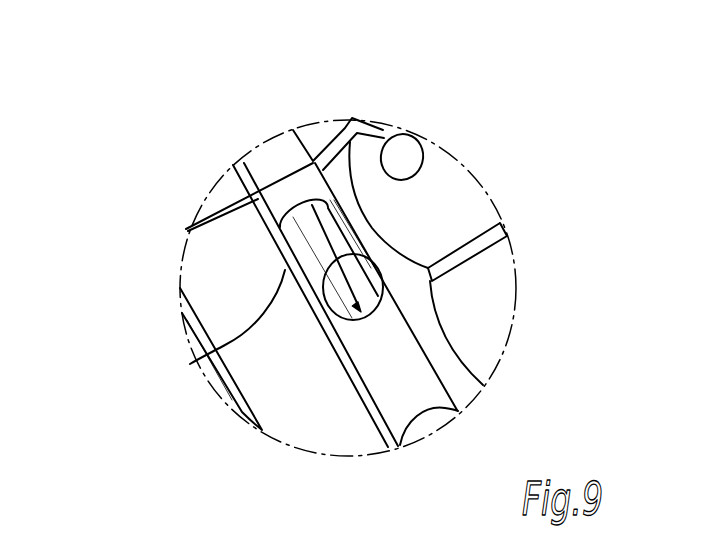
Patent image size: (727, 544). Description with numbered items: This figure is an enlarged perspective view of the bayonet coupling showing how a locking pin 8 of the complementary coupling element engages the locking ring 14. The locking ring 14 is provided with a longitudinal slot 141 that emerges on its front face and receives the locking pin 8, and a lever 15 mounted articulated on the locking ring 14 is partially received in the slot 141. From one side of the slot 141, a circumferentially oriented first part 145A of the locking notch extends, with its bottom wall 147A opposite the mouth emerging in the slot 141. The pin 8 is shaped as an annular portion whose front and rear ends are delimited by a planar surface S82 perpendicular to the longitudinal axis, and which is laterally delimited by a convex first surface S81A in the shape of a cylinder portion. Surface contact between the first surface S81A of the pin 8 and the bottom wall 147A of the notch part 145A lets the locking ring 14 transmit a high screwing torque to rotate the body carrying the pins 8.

The locking pin 8 is at (308, 305).
The locking ring 14 is at (480, 305).
The lever 15 is at (281, 147).
The longitudinal slot 141 is at (171, 231).
The first part of locking notch 145A is at (271, 188).
The bottom wall 147A is at (330, 253).
The planar surface S82 is at (351, 218).
The first surface S81A is at (365, 330).